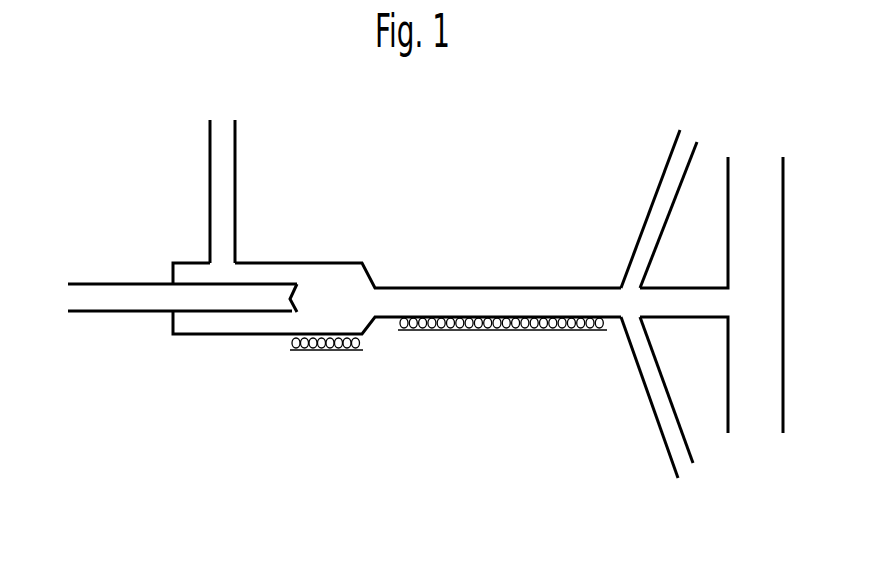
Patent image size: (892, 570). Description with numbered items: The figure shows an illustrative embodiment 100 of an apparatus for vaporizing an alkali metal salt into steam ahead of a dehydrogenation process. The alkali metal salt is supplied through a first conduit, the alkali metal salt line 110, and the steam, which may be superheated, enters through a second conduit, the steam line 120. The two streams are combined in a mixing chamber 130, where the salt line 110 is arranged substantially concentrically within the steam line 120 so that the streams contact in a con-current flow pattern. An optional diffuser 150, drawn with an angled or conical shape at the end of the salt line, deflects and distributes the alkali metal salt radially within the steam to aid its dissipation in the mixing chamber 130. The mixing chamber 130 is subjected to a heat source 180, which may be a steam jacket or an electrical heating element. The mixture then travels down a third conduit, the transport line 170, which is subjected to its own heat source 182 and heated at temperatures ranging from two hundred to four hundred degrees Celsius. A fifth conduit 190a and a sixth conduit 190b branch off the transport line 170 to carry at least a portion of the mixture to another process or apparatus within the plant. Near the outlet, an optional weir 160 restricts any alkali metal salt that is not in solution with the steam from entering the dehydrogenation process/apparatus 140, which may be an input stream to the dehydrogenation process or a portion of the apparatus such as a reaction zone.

The illustrative embodiment 100 is at (97, 137).
The alkali metal salt line 110 is at (108, 282).
The steam line 120 is at (240, 212).
The mixing chamber 130 is at (322, 253).
The dehydrogenation process/apparatus 140 is at (756, 223).
The diffuser 150 is at (295, 314).
The weir 160 is at (732, 298).
The transport line 170 is at (494, 283).
The heat source 180 is at (350, 357).
The heat source 182 is at (495, 340).
The fifth conduit 190a is at (645, 212).
The sixth conduit 190b is at (635, 383).